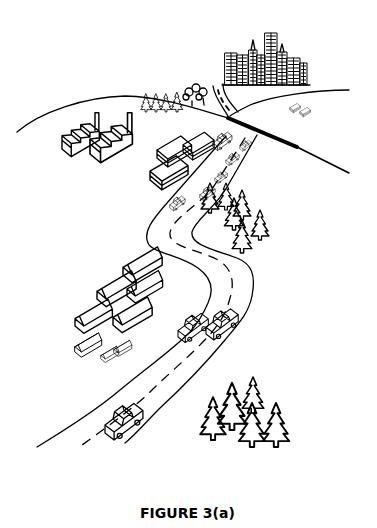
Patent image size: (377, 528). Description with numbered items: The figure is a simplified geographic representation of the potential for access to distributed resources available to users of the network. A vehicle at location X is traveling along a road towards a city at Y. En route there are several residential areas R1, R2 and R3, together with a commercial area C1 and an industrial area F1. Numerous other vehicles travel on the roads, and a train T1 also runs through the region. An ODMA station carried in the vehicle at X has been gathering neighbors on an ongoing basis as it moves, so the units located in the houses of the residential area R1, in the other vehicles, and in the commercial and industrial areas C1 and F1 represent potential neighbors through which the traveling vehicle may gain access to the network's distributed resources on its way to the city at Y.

The city Y is at (271, 59).
The residential area R3 is at (174, 89).
The industrial area F1 is at (86, 138).
The commercial area C1 is at (172, 162).
The residential area R2 is at (319, 114).
The train T1 is at (288, 145).
The residential area R1 is at (113, 305).
The location of the vehicle X is at (178, 291).